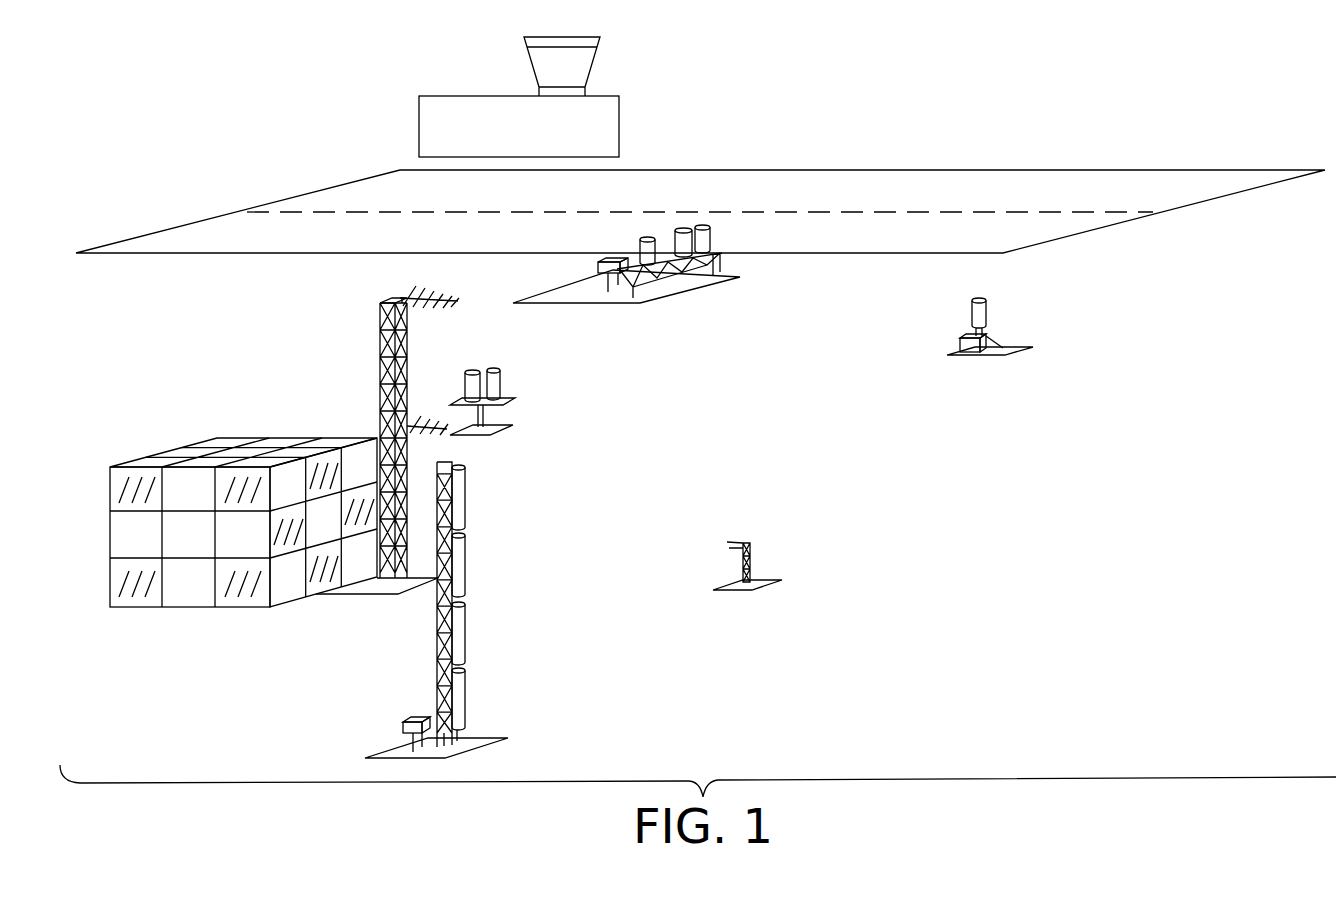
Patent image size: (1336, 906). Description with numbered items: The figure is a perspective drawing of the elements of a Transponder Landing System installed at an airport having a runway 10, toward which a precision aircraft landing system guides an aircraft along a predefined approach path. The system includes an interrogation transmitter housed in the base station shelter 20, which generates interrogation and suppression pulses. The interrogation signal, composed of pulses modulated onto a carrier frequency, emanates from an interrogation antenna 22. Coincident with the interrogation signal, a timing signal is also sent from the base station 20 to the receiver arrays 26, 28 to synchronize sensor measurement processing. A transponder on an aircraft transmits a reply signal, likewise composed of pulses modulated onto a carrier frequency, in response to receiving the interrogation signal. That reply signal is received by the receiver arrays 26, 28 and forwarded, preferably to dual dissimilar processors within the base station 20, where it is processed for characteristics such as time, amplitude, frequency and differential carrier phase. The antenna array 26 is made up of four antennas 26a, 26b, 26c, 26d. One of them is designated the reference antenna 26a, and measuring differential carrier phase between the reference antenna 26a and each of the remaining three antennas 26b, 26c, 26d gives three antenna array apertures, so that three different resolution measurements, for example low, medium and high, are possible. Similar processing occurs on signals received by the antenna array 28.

The runway 10 is at (978, 108).
The base station shelter 20 is at (207, 438).
The interrogation antenna 22 is at (497, 383).
The receiver array 26 is at (504, 610).
The reference antenna 26a is at (460, 703).
The antenna 26b is at (460, 635).
The antenna 26c is at (458, 568).
The antenna 26d is at (458, 493).
The receiver array 28 is at (729, 239).